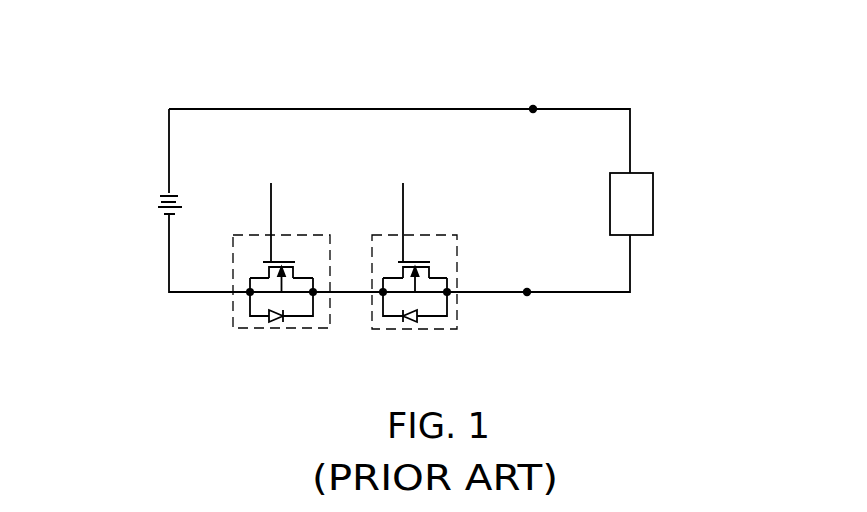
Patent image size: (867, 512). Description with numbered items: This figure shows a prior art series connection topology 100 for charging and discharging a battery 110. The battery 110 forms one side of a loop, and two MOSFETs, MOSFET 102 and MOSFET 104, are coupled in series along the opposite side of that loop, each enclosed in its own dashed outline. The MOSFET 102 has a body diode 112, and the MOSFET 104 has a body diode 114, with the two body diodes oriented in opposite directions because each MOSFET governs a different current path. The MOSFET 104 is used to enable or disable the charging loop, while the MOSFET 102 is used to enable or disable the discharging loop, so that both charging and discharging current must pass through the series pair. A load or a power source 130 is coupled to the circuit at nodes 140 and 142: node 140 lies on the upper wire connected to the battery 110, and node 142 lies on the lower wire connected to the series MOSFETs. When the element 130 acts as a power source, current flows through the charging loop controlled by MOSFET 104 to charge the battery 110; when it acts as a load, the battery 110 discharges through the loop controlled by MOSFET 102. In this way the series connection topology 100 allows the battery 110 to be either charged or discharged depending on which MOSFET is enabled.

The series connection topology 100 is at (660, 91).
The MOSFET 102 is at (284, 235).
The MOSFET 104 is at (419, 235).
The battery 110 is at (168, 193).
The body diode 112 is at (273, 318).
The body diode 114 is at (410, 323).
The load or power source 130 is at (638, 172).
The node 140 is at (533, 109).
The node 142 is at (527, 292).